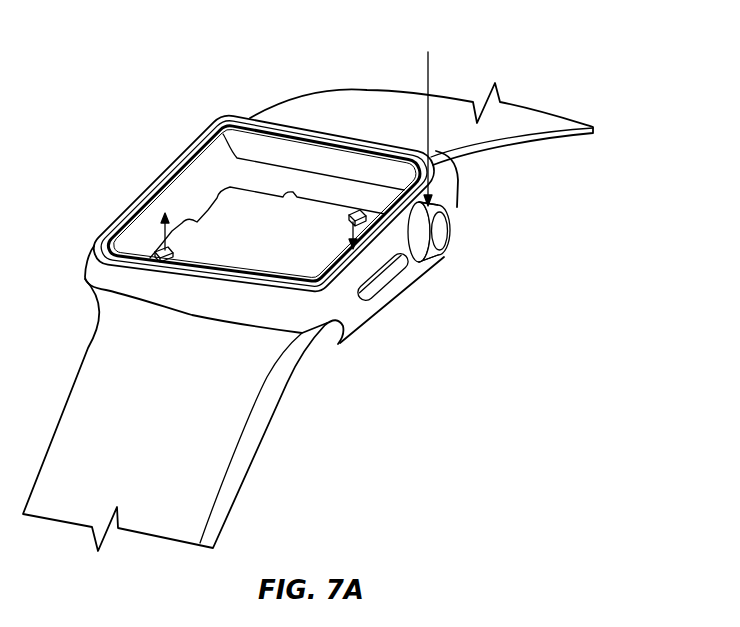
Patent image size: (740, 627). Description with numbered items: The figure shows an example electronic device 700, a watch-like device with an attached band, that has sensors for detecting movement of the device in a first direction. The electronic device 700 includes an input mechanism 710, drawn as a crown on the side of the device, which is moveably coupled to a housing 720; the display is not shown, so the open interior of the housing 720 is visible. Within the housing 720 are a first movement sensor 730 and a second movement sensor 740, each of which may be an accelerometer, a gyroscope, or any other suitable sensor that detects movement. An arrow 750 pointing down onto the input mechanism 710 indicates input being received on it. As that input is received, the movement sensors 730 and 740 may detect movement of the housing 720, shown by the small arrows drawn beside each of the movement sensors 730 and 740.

The electronic device 700 is at (130, 142).
The input mechanism 710 is at (420, 271).
The housing 720 is at (344, 342).
The first movement sensor 730 is at (346, 215).
The second movement sensor 740 is at (175, 259).
The arrow 750 is at (430, 67).